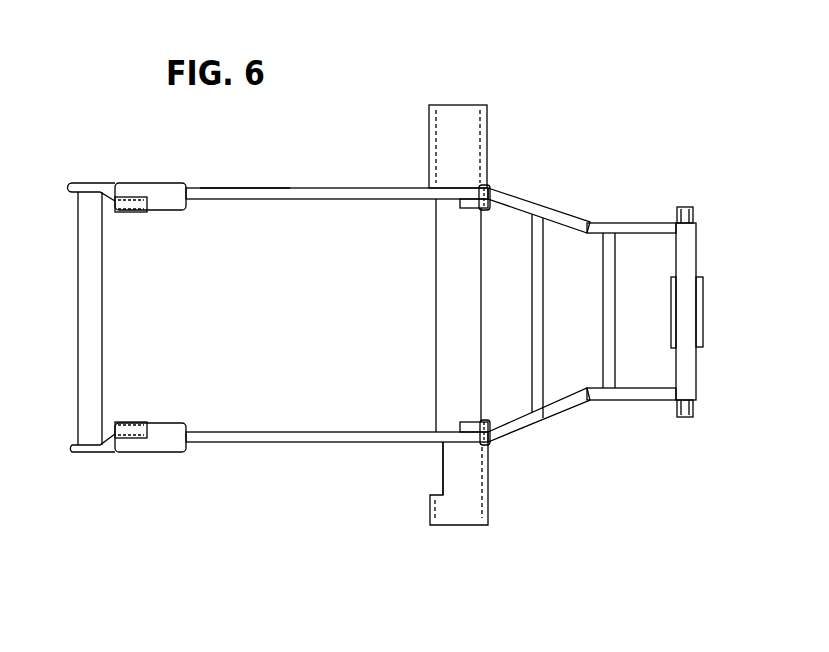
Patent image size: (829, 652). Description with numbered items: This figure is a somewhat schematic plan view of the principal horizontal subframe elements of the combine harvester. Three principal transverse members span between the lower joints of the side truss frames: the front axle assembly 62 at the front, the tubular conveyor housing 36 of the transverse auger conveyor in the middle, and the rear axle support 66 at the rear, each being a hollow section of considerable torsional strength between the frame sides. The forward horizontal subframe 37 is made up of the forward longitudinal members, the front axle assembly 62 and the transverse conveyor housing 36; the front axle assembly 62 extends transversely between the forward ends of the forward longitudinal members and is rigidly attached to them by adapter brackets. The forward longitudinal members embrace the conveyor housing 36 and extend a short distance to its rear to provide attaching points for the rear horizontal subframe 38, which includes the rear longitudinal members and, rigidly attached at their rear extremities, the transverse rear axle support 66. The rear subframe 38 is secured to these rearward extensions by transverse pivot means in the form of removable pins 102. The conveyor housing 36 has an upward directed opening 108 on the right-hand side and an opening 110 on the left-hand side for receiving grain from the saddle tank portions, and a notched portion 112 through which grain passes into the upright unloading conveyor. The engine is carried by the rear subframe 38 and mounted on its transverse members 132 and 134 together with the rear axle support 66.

The tubular housing 36 is at (440, 304).
The forward horizontal subframe 37 is at (240, 182).
The rear horizontal subframe 38 is at (594, 214).
The front axle assembly 62 is at (80, 301).
The rear axle support 66 is at (692, 250).
The removable pin 102 is at (487, 445).
The upward directed opening 108 is at (455, 110).
The conveyor housing opening 110 is at (455, 520).
The notched portion 112 is at (443, 468).
The transverse member 132 is at (541, 313).
The transverse member 134 is at (614, 321).